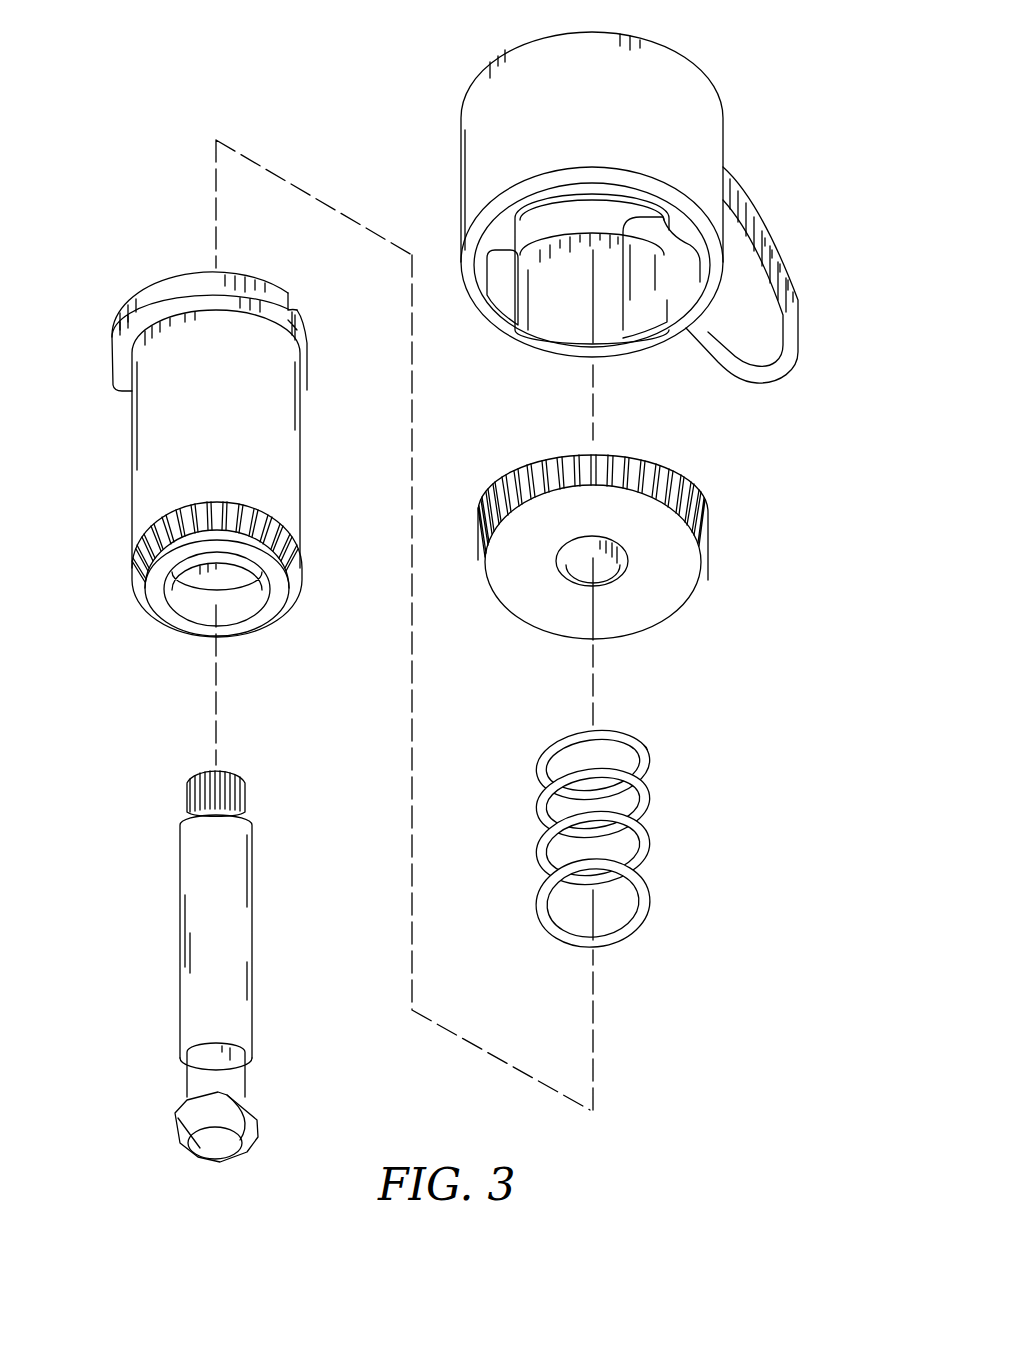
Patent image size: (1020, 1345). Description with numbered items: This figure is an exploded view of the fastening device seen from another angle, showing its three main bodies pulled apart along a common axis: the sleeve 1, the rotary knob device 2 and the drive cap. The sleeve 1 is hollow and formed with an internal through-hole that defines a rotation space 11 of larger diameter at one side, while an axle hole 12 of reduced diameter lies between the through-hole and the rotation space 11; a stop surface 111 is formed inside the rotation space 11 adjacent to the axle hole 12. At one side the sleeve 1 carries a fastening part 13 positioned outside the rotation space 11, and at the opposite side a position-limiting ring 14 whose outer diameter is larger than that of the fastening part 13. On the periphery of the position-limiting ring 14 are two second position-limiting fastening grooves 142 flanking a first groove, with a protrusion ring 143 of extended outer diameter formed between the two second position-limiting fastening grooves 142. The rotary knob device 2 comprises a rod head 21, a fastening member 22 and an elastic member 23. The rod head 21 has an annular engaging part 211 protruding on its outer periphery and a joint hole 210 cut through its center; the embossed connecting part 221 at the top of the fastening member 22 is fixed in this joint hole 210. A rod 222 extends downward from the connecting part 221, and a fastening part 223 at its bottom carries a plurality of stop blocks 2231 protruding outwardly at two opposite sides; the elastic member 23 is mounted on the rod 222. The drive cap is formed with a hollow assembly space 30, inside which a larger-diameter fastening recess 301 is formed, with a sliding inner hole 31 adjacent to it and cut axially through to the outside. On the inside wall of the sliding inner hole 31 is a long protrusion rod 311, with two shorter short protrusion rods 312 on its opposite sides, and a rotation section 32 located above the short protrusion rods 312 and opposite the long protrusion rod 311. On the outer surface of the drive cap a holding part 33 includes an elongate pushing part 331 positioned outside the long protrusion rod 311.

The sleeve 1 is at (224, 455).
The rotation space 11 is at (190, 594).
The stop surface 111 is at (225, 594).
The axle hole 12 is at (233, 573).
The fastening part 13 is at (228, 540).
The position-limiting ring 14 is at (251, 309).
The second position-limiting fastening grooves 142 is at (296, 330).
The protrusion ring 143 is at (268, 292).
The rotary knob device 2 is at (426, 793).
The rod head 21 is at (623, 555).
The joint hole 210 is at (576, 567).
The annular engaging part 211 is at (676, 498).
The fastening member 22 is at (271, 963).
The connecting part 221 is at (238, 801).
The rod 222 is at (228, 922).
The fastening part 223 is at (316, 1127).
The stop blocks 2231 is at (248, 1130).
The elastic member 23 is at (643, 782).
The assembly space 30 is at (561, 251).
The fastening recess 301 is at (582, 223).
The sliding inner hole 31 is at (585, 332).
The long protrusion rod 311 is at (644, 318).
The short protrusion rods 312 is at (511, 290).
The rotation section 32 is at (567, 312).
The holding part 33 is at (758, 274).
The pushing part 331 is at (788, 304).